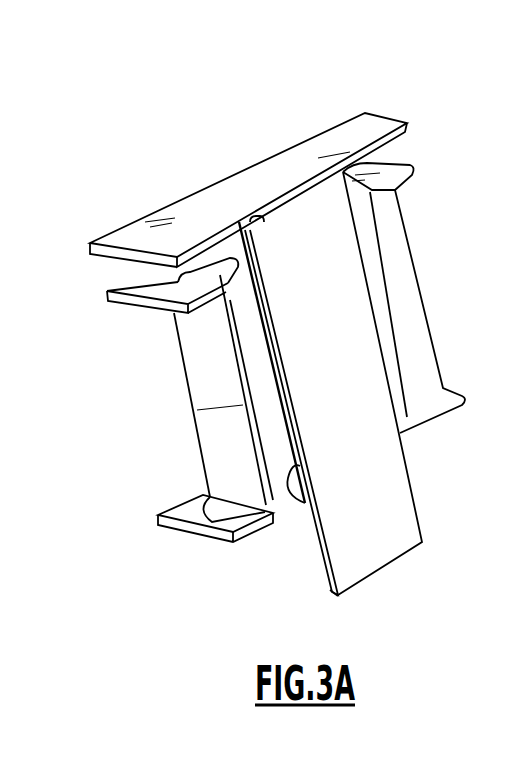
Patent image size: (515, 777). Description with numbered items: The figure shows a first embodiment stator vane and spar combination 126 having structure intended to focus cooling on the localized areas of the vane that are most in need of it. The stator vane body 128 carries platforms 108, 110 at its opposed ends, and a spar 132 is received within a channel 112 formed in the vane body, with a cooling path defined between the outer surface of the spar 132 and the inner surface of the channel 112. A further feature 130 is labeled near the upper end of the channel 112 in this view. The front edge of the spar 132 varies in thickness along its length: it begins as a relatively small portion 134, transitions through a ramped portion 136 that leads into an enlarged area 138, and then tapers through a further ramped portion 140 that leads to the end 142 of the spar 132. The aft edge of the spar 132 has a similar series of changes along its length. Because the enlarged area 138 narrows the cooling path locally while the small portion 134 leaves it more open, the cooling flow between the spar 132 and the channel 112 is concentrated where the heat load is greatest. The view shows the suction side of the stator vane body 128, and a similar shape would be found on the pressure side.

The combination 126 is at (440, 104).
The platform 108 is at (152, 264).
The platform 110 is at (187, 518).
The channel 112 is at (406, 298).
The stator vane body 128 is at (205, 378).
The cap 130 is at (366, 217).
The spar 132 is at (417, 480).
The relatively small portion 134 is at (262, 283).
The ramped portion 136 is at (230, 262).
The enlarged area 138 is at (283, 400).
The ramped portion 140 is at (288, 500).
The end 142 is at (333, 596).